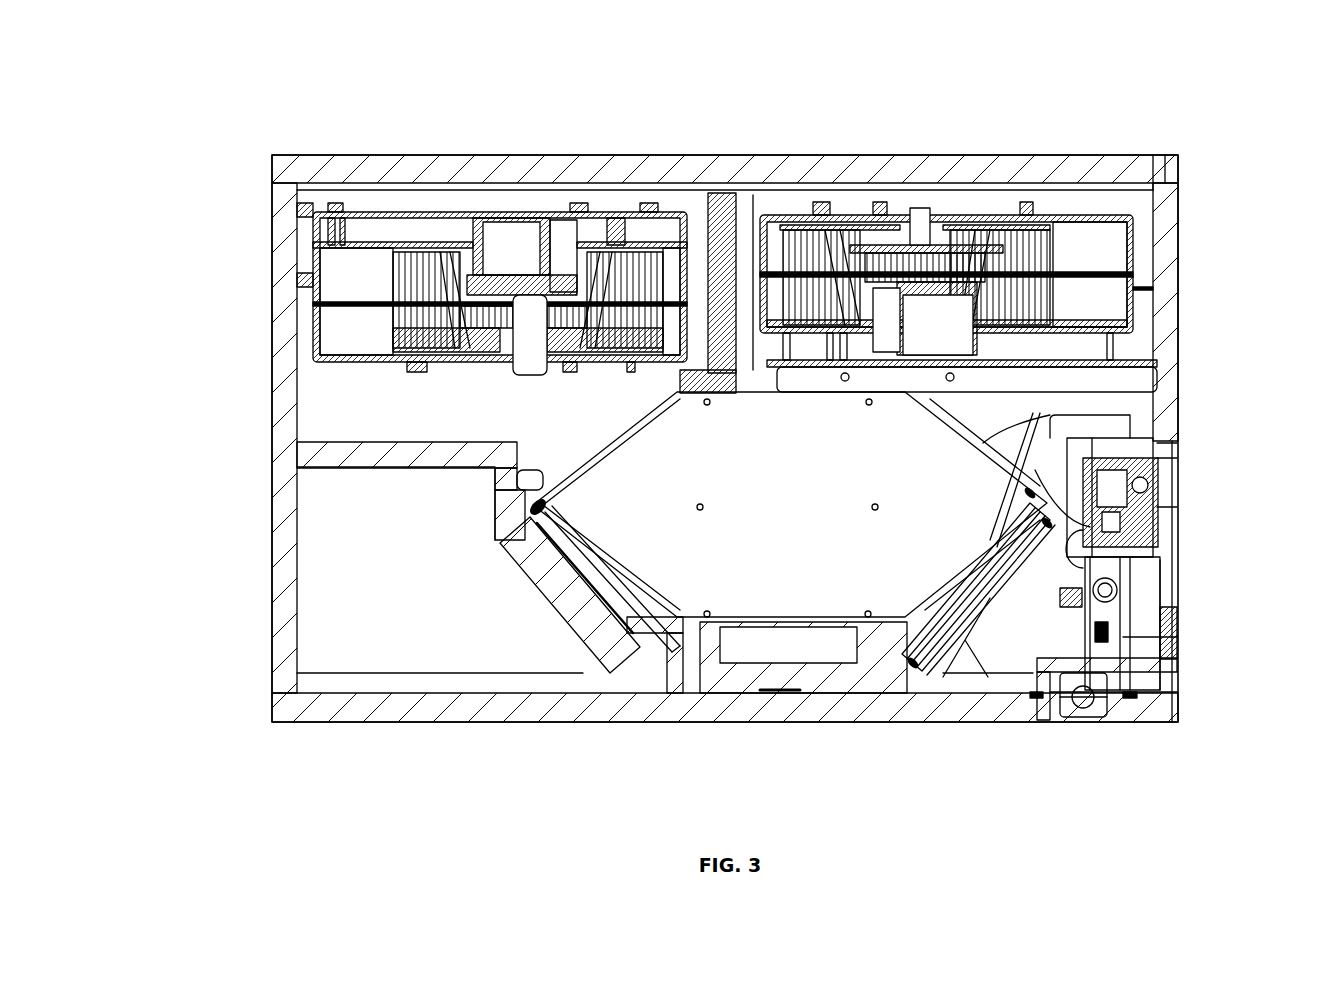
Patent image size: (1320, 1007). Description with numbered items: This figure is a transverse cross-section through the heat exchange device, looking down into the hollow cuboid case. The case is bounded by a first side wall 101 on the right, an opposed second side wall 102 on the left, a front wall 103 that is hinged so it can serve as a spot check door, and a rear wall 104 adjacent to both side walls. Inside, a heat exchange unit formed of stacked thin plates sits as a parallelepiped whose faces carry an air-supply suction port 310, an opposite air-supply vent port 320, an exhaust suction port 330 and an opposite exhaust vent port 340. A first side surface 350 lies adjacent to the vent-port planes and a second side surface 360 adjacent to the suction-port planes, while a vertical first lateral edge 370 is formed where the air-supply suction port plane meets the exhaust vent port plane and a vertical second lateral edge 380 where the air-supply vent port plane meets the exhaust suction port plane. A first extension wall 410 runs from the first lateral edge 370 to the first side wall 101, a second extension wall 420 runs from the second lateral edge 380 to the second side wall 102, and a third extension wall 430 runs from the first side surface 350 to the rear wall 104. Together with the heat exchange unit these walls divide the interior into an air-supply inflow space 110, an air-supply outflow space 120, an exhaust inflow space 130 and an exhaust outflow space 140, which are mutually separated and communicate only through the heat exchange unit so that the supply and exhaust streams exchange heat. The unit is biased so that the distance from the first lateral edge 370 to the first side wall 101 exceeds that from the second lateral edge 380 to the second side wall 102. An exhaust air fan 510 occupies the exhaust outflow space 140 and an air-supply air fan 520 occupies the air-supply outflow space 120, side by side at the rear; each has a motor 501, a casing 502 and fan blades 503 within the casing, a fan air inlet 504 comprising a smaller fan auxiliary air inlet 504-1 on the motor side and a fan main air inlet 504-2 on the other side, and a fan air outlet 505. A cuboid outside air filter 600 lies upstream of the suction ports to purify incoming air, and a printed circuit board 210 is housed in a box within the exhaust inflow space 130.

The first side wall 101 is at (271, 372).
The second side wall 102 is at (1182, 273).
The front wall 103 is at (365, 723).
The rear wall 104 is at (362, 154).
The air-supply inflow space 110 is at (320, 557).
The air-supply outflow space 120 is at (1165, 162).
The exhaust inflow space 130 is at (1160, 636).
The exhaust outflow space 140 is at (269, 160).
The printed circuit board 210 is at (1107, 537).
The air-supply suction port 310 is at (637, 650).
The air-supply vent port 320 is at (1065, 440).
The exhaust suction port 330 is at (953, 640).
The exhaust vent port 340 is at (575, 443).
The first side surface 350 is at (787, 215).
The second side surface 360 is at (757, 630).
The first lateral edge 370 is at (493, 522).
The second lateral edge 380 is at (1125, 540).
The first extension wall 410 is at (350, 470).
The second extension wall 420 is at (1180, 442).
The third extension wall 430 is at (710, 205).
The motor 501 is at (522, 245).
The casing 502 is at (650, 237).
The fan blades 503 is at (578, 215).
The fan air inlet 504 is at (727, 185).
The fan auxiliary air inlet 504-1 is at (464, 268).
The fan main air inlet 504-2 is at (429, 265).
The fan air outlet 505 is at (318, 283).
The exhaust air fan 510 is at (465, 100).
The air-supply air fan 520 is at (832, 107).
The outside air filter 600 is at (600, 640).